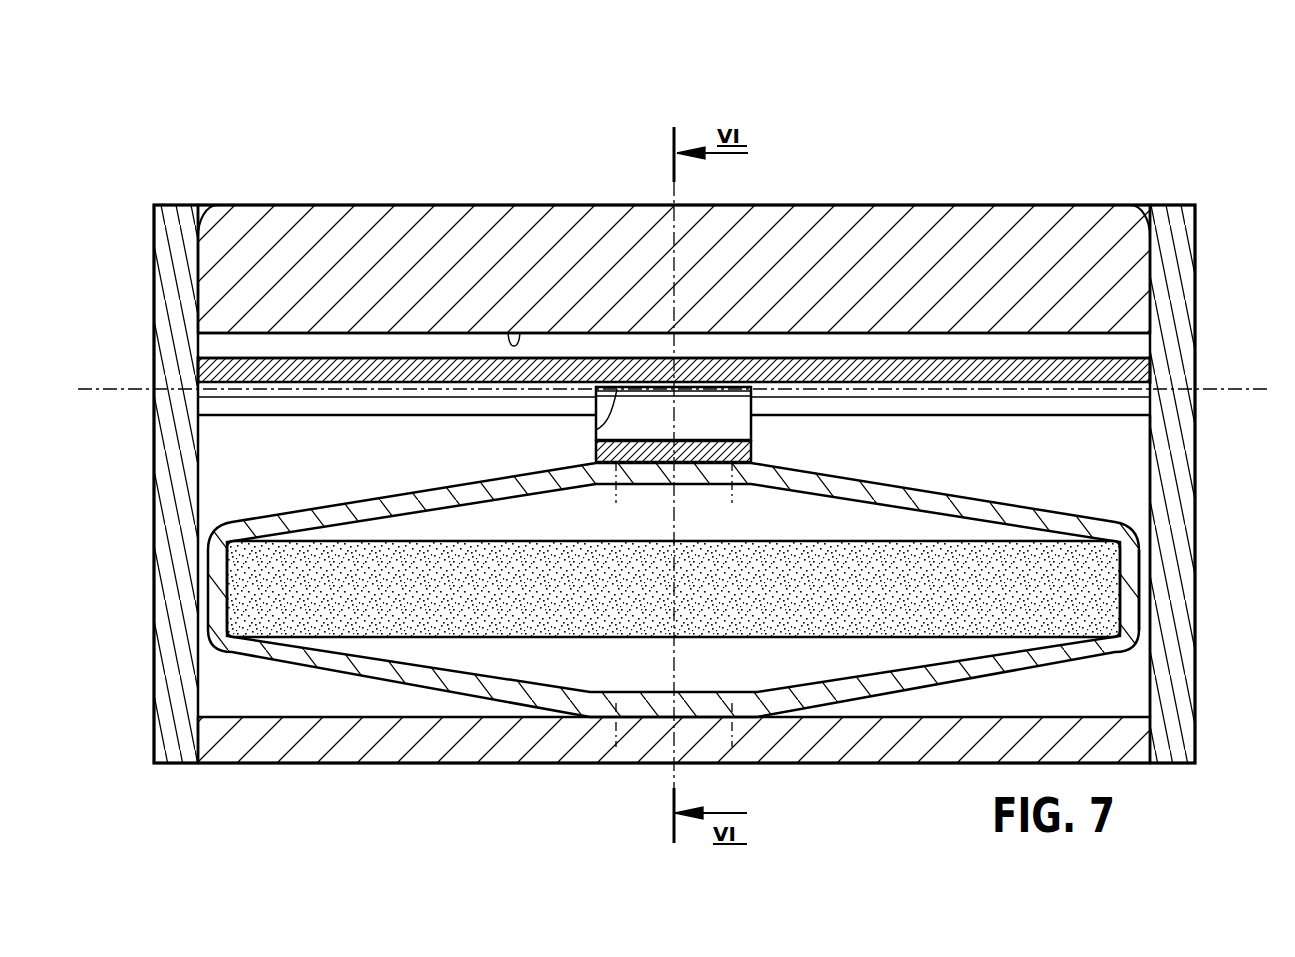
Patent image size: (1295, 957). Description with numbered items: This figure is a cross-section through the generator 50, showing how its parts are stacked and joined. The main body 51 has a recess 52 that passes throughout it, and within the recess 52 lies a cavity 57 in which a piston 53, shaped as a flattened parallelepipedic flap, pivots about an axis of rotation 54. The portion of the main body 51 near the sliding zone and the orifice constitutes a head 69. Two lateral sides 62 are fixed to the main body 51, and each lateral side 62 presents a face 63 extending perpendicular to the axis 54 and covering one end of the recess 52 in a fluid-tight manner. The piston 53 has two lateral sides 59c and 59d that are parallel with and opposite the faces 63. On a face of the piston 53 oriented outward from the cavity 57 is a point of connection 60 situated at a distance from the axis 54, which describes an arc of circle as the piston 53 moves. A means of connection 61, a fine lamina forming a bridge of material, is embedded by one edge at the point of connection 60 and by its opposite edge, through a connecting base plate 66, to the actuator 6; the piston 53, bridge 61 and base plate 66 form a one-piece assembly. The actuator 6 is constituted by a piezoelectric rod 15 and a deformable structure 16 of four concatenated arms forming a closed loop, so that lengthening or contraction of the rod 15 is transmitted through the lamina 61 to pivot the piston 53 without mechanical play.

The generator 50 is at (250, 132).
The face 63 is at (217, 203).
The main body 51 is at (398, 250).
The head 69 is at (509, 333).
The piston 53 is at (937, 360).
The cavity 57 is at (1022, 350).
The lateral side 62 is at (163, 270).
The lateral side of piston 59c is at (198, 367).
The lateral side of piston 59d is at (1150, 367).
The axis of rotation 54 is at (105, 392).
The point of connection 60 is at (596, 430).
The means of connection 61 is at (733, 420).
The connecting base plate 66 is at (687, 455).
The deformable structure 16 is at (1008, 500).
The recess 52 is at (1127, 492).
The piezoelectric rod 15 is at (878, 605).
The actuator 6 is at (1142, 608).